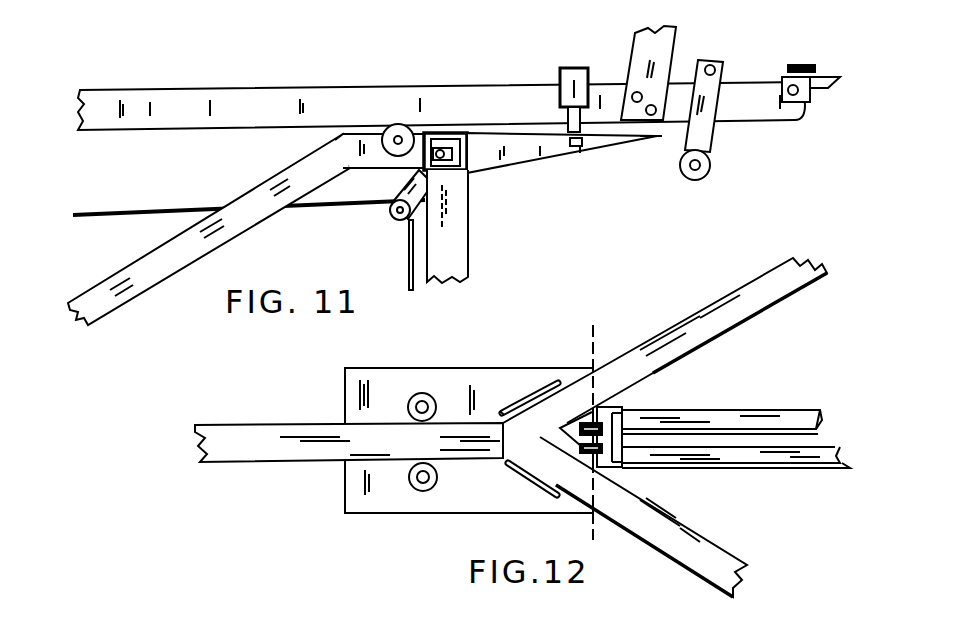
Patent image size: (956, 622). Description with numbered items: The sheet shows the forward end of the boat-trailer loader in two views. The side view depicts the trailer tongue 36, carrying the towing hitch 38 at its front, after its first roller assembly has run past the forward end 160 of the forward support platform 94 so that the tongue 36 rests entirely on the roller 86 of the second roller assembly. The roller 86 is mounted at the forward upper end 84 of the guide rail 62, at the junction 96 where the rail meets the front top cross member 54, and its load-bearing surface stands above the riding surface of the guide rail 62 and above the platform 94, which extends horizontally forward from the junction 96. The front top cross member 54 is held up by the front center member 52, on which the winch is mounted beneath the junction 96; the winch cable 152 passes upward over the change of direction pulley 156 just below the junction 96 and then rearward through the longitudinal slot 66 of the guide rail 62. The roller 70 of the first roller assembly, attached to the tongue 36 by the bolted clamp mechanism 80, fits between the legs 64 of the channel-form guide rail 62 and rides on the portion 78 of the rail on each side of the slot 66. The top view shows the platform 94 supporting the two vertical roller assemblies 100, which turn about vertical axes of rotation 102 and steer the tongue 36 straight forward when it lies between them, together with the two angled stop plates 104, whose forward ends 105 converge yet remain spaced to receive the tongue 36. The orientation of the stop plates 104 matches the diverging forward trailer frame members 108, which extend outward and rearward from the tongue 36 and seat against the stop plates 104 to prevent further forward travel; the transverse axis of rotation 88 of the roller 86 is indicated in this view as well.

In FIG. 11, the tongue 36 is at (352, 88).
In FIG. 12, the tongue 36 is at (247, 432).
In FIG. 11, the towing hitch 38 is at (824, 82).
In FIG. 11, the front center member 52 is at (462, 249).
In FIG. 11, the front top cross member 54 is at (469, 172).
In FIG. 11, the guide rail 62 is at (171, 263).
In FIG. 12, the guide rail 62 is at (713, 442).
In FIG. 12, the legs 64 is at (800, 413).
In FIG. 12, the longitudinal slot 66 is at (757, 438).
In FIG. 11, the roller 70 is at (716, 168).
In FIG. 12, the portion of guide rail 78 is at (648, 458).
In FIG. 11, the bolted clamp mechanism 80 is at (708, 85).
In FIG. 11, the forward upper end 84 is at (336, 150).
In FIG. 11, the roller 86 is at (408, 126).
In FIG. 12, the roller 86 is at (558, 434).
In FIG. 12, the transverse axis of rotation 88 is at (597, 337).
In FIG. 11, the forward support platform 94 is at (566, 154).
In FIG. 11, the junction 96 is at (392, 160).
In FIG. 11, the vertical roller assemblies 100 is at (563, 78).
In FIG. 12, the vertical roller assemblies 100 is at (426, 400).
In FIG. 12, the vertical axes of rotation 102 is at (413, 406).
In FIG. 12, the stop plates 104 is at (541, 396).
In FIG. 12, the forward ends 105 is at (501, 412).
In FIG. 12, the forward trailer frame members 108 is at (745, 298).
In FIG. 11, the cable 152 is at (170, 206).
In FIG. 11, the change of direction pulley 156 is at (395, 220).
In FIG. 11, the forward end 160 is at (665, 137).